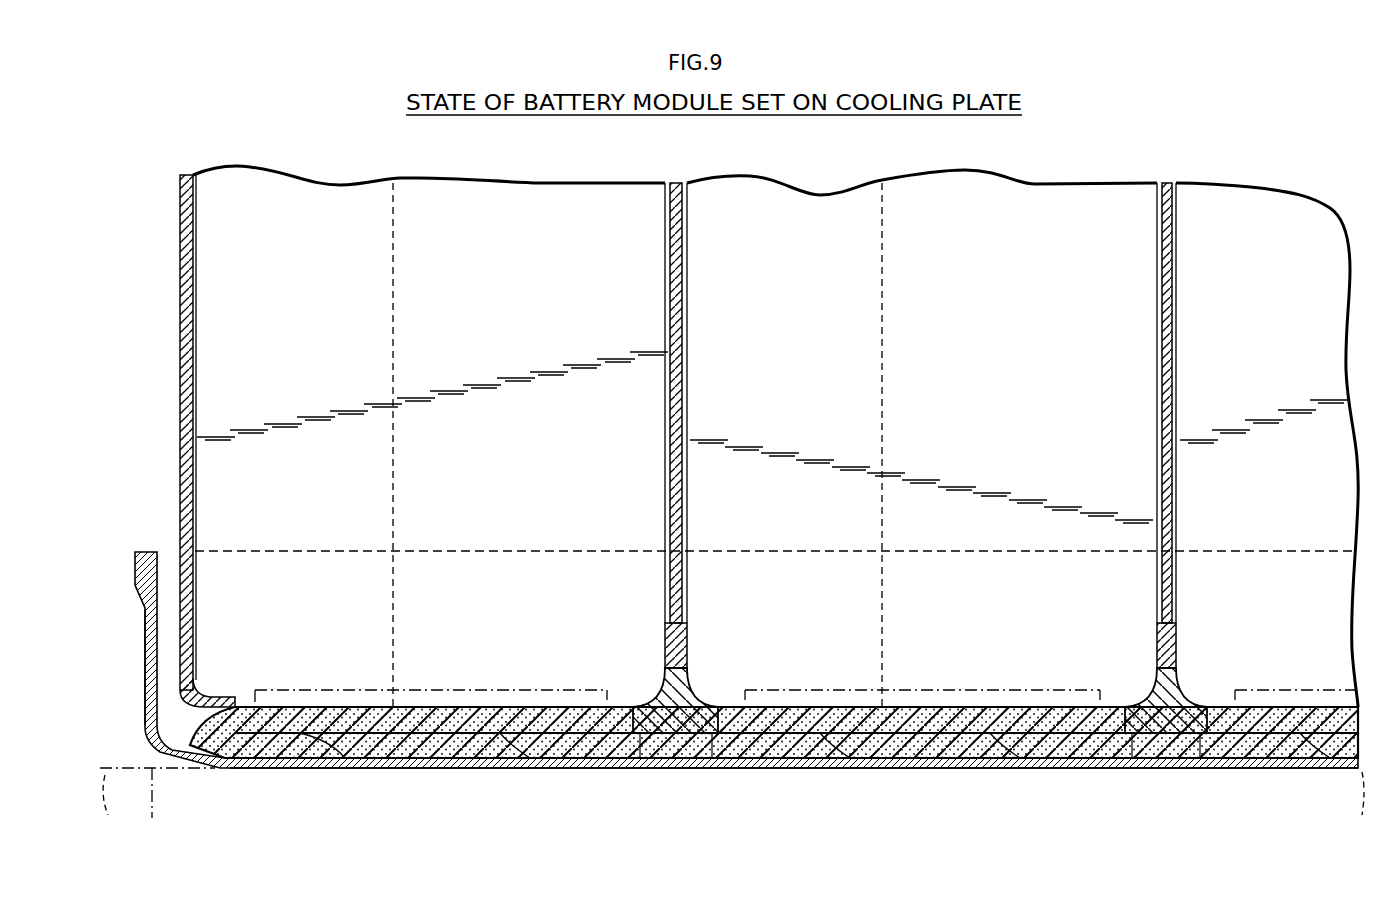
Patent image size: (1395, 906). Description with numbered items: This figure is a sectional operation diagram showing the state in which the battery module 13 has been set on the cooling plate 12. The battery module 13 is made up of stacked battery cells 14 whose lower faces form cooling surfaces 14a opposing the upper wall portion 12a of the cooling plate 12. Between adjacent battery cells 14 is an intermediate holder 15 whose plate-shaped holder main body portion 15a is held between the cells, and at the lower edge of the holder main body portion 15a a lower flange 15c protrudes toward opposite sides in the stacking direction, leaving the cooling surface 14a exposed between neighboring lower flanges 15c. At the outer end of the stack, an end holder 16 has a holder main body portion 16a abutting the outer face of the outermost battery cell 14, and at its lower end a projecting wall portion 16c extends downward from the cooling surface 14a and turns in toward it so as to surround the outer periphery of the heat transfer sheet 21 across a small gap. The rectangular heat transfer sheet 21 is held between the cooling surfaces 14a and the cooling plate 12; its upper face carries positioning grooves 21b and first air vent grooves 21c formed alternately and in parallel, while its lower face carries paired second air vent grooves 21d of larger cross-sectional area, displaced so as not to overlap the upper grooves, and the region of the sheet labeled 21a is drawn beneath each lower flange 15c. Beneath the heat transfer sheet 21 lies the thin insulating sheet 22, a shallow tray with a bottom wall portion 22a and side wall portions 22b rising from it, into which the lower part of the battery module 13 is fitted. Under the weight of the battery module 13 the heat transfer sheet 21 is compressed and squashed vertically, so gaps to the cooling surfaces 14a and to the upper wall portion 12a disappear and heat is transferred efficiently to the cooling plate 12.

The cooling plate 12 is at (133, 763).
The upper wall portion 12a is at (155, 808).
The battery module 13 is at (1071, 168).
The battery cell 14 is at (443, 364).
The cooling surface 14a is at (515, 707).
The intermediate holder 15 is at (686, 316).
The holder main body portion 15a is at (670, 387).
The lower flange 15c is at (690, 700).
The end holder 16 is at (178, 303).
The holder main body portion 16a is at (185, 368).
The projecting wall portion 16c is at (207, 712).
The heat transfer sheet 21 is at (840, 702).
The cooling plate recess 21a is at (672, 758).
The positioning groove 21b is at (607, 690).
The first air vent groove 21c is at (430, 697).
The second air vent groove 21d is at (330, 752).
The insulating sheet 22 is at (130, 575).
The bottom wall portion 22a is at (900, 768).
The side wall portion 22b is at (148, 680).